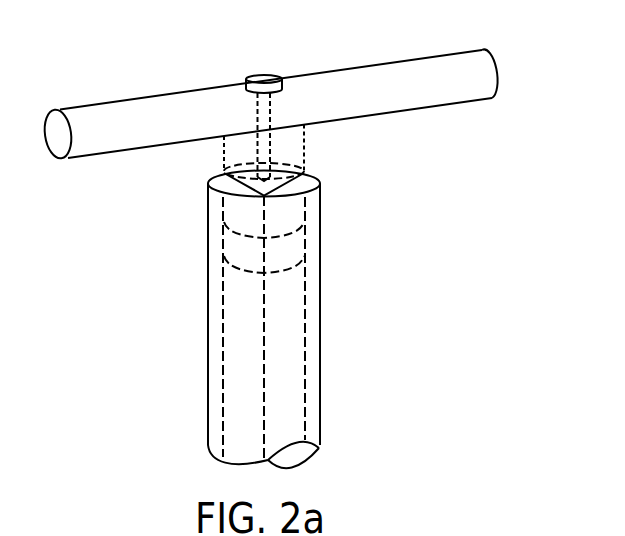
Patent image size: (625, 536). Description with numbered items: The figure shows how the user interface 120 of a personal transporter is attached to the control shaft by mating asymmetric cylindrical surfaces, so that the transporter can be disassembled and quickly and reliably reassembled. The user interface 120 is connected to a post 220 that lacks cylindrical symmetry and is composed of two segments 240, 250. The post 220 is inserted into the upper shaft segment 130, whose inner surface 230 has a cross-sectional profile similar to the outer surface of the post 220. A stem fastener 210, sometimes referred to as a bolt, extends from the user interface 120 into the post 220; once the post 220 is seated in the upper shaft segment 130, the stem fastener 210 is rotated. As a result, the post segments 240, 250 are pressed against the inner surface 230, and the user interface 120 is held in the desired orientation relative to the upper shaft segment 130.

The user interface 120 is at (480, 48).
The stem fastener 210 is at (264, 74).
The post 220 is at (307, 155).
The post segment 240 is at (305, 204).
The post segment 250 is at (303, 238).
The upper shaft segment 130 is at (320, 278).
The inner surface 230 is at (305, 332).